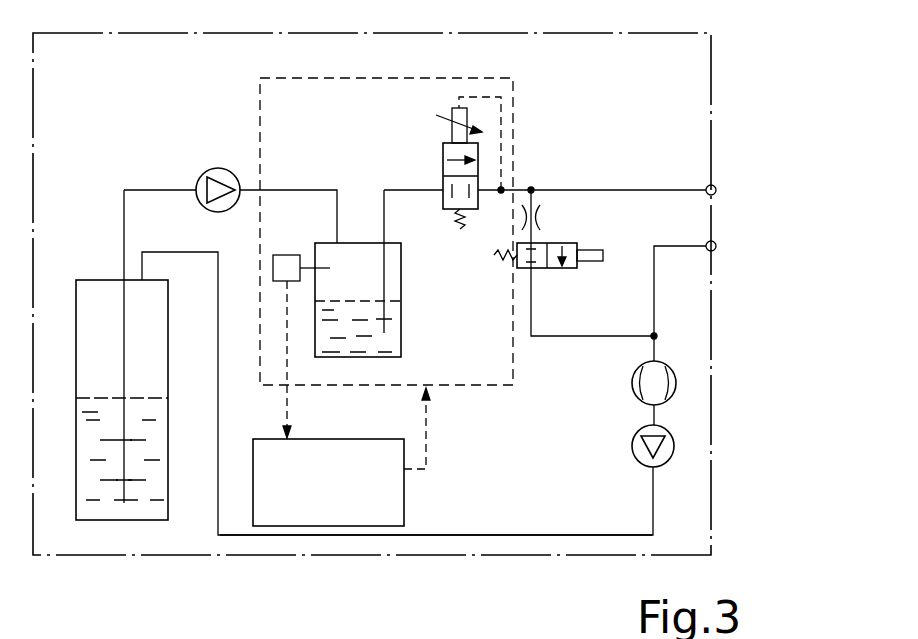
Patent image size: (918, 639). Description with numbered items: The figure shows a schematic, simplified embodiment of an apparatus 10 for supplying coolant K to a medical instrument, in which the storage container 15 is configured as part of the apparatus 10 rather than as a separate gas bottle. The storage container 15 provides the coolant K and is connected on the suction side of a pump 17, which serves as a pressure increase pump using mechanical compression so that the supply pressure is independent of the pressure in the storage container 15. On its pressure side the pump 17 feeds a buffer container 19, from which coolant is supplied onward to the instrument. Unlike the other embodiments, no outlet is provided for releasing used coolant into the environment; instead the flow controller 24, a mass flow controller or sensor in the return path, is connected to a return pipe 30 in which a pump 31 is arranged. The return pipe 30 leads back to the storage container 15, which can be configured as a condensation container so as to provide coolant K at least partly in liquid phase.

The apparatus 10 is at (722, 100).
The storage container 15 is at (91, 262).
The pump 17 is at (218, 168).
The buffer container 19 is at (401, 283).
The flow controller 24 is at (628, 388).
The return pipe 30 is at (478, 534).
The pump 31 is at (618, 447).